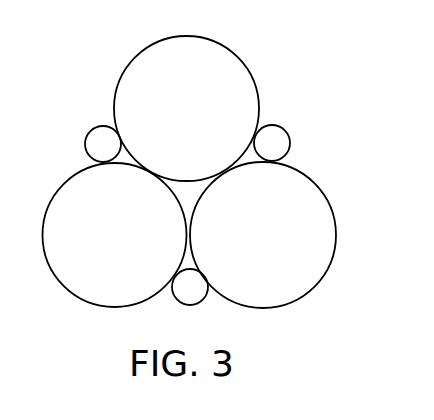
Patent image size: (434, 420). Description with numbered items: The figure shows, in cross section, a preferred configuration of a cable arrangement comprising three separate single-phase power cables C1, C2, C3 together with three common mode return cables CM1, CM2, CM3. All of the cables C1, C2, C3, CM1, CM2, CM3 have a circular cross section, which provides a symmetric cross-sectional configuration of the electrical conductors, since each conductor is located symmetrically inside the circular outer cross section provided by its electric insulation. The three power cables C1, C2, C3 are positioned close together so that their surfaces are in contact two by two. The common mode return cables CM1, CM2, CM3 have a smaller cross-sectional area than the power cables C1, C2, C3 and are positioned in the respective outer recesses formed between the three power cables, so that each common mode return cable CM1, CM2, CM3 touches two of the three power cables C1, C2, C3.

The single-phase power cable C1 is at (186, 108).
The single-phase power cable C2 is at (115, 235).
The single-phase power cable C3 is at (263, 235).
The common mode return cable CM1 is at (106, 139).
The common mode return cable CM2 is at (269, 139).
The common mode return cable CM3 is at (187, 285).